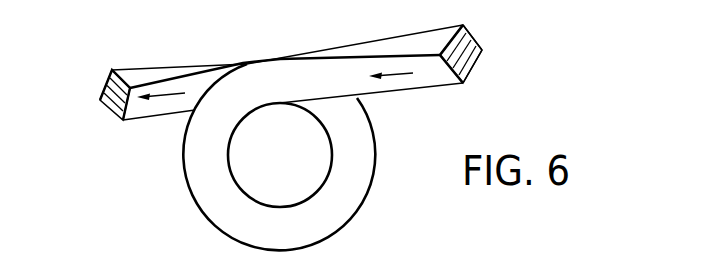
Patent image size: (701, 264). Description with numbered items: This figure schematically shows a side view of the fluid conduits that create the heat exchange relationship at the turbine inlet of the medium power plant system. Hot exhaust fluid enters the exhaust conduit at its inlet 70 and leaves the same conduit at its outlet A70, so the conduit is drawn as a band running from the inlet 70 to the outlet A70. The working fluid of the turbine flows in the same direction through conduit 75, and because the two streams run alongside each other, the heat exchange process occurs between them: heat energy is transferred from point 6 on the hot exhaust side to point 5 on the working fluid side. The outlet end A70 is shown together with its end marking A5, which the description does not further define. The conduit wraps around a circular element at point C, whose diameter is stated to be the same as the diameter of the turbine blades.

The point 5 is at (466, 64).
The point 6 is at (476, 56).
The inlet of conduit 70 is at (464, 47).
The conduit 75 is at (462, 84).
The second belt A5 is at (113, 107).
The outlet of conduit A70 is at (110, 79).
The point C is at (350, 186).